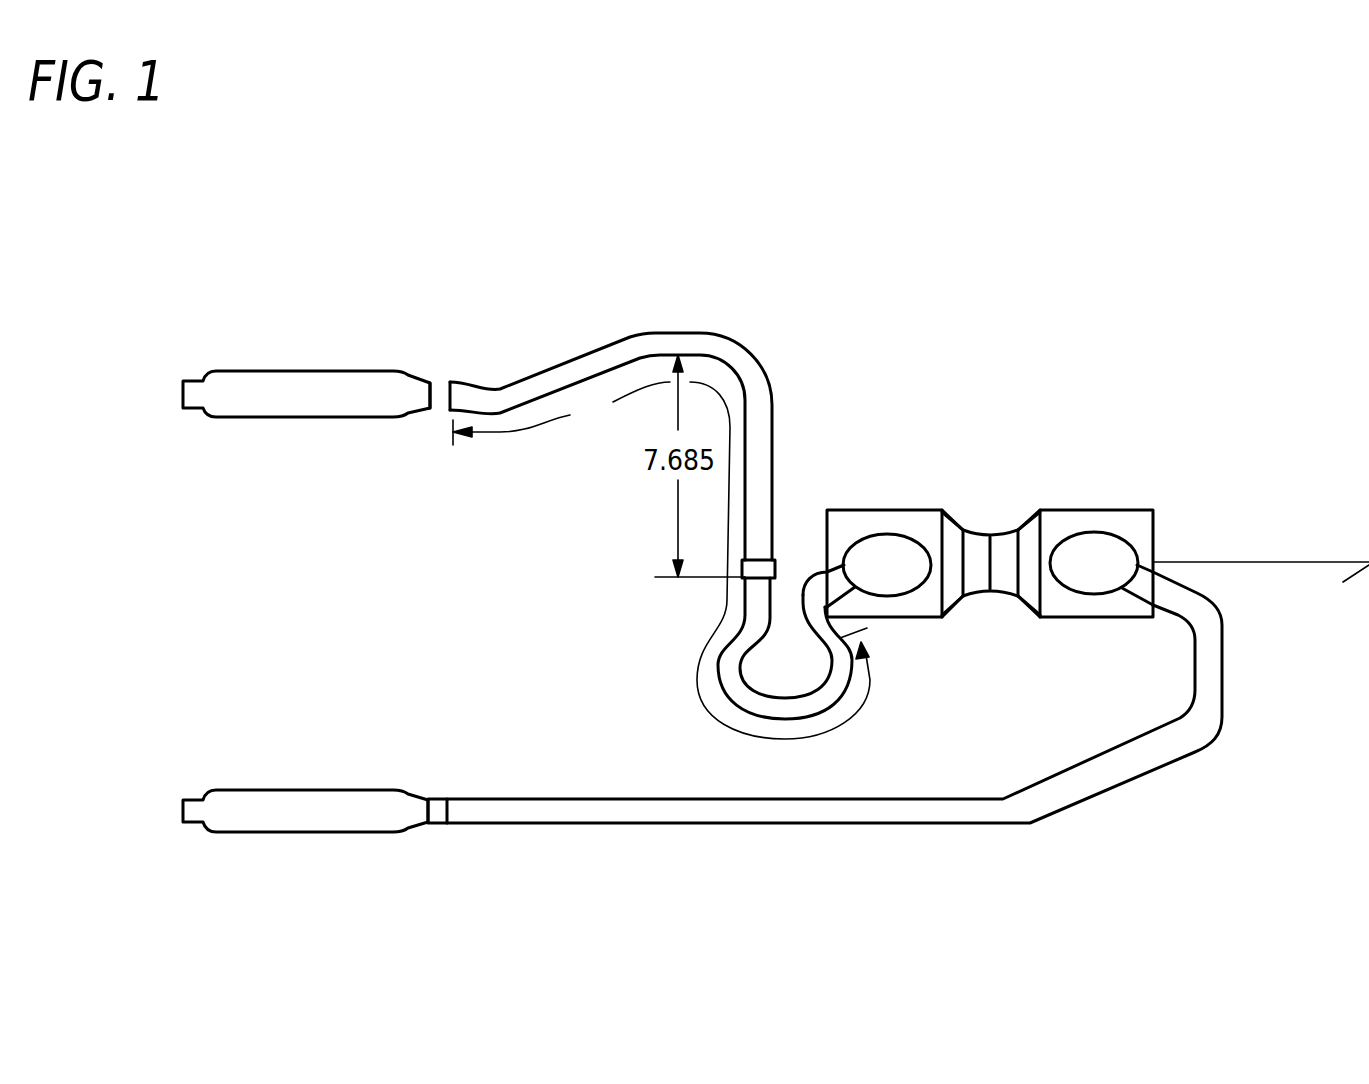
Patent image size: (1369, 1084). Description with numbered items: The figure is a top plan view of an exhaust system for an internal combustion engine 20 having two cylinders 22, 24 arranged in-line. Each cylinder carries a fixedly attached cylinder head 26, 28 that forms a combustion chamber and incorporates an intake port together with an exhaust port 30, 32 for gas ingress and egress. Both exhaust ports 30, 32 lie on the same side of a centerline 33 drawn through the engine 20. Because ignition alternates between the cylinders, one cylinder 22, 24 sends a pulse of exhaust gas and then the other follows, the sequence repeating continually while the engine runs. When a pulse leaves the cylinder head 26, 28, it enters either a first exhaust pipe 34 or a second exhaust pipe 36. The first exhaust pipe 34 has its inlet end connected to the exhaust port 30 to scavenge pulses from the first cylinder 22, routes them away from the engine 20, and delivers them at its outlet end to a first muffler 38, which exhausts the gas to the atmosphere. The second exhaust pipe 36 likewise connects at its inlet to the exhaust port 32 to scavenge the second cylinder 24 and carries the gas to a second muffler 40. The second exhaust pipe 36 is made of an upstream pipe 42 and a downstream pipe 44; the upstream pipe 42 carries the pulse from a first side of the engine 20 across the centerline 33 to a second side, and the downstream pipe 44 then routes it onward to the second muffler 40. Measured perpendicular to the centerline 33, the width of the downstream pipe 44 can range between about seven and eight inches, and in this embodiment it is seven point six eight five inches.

The internal combustion engine 20 is at (1000, 530).
The first cylinder 22 is at (1117, 553).
The second cylinder 24 is at (887, 550).
The cylinder head 26 is at (1030, 590).
The cylinder head 28 is at (950, 593).
The exhaust port 30 is at (1147, 587).
The exhaust port 32 is at (836, 580).
The centerline 33 is at (1305, 562).
The first exhaust pipe 34 is at (920, 815).
The second exhaust pipe 36 is at (661, 560).
The first muffler 38 is at (330, 823).
The second muffler 40 is at (350, 370).
The upstream pipe 42 is at (778, 698).
The downstream pipe 44 is at (704, 340).